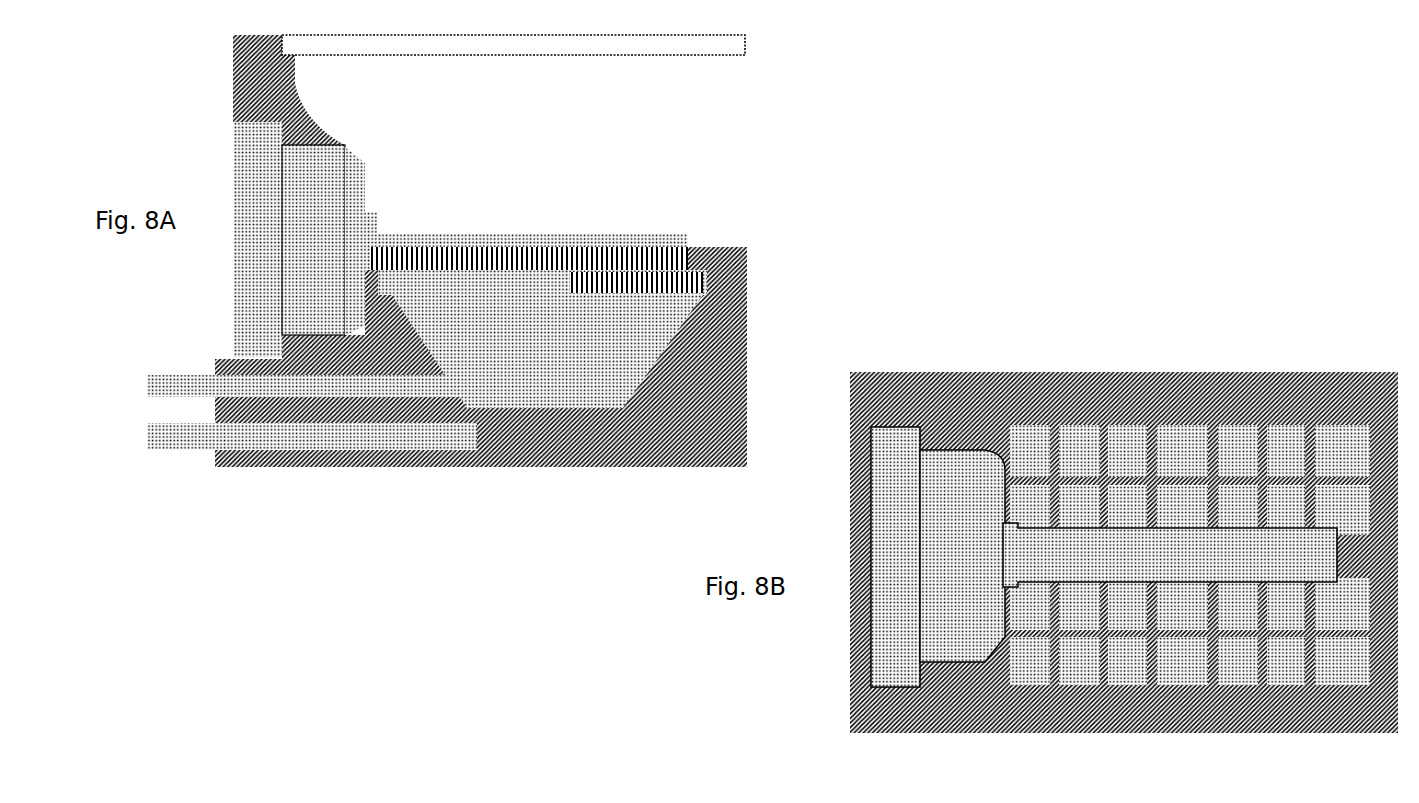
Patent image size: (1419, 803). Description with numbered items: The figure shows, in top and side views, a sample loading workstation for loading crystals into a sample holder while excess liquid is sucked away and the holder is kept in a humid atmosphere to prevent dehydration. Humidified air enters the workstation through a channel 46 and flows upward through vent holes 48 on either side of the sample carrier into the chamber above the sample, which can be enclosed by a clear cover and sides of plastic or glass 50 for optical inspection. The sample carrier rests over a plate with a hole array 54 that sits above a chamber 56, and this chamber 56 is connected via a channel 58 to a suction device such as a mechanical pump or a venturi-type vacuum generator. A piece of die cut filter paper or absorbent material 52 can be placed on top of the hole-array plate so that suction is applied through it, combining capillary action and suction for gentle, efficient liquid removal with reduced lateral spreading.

In FIG. 8A, the channel 46 is at (435, 433).
In FIG. 8B, the vent holes 48 is at (1228, 442).
In FIG. 8A, the clear cover and sides of plastic or glass 50 is at (467, 50).
In FIG. 8A, the die cut filter paper or absorbent material 52 is at (593, 265).
In FIG. 8A, the plate with a hole array 54 is at (660, 283).
In FIG. 8A, the chamber 56 is at (602, 352).
In FIG. 8A, the channel 58 is at (215, 380).